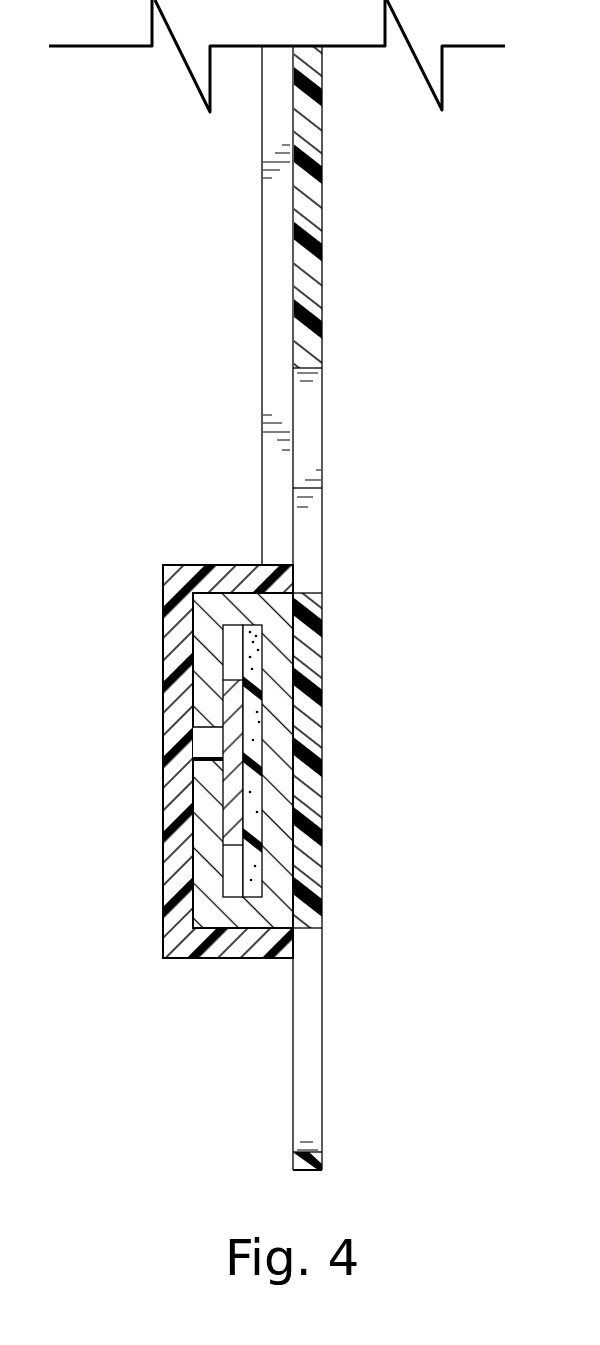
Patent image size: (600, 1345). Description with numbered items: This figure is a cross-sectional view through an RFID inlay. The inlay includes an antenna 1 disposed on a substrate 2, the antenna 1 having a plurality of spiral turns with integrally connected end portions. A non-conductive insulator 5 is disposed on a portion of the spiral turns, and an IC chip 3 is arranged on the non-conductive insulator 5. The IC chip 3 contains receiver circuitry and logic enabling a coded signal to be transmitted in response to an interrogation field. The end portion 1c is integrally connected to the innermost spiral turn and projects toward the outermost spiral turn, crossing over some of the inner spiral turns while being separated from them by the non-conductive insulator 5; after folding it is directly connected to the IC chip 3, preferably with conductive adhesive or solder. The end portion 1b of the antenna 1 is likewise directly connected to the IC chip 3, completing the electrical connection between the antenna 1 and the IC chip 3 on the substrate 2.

The antenna 1 is at (269, 273).
The second end portion 1b is at (208, 738).
The end portion 1c is at (200, 885).
The substrate 2 is at (310, 266).
The IC chip 3 is at (235, 727).
The non-conductive insulator 5 is at (258, 658).